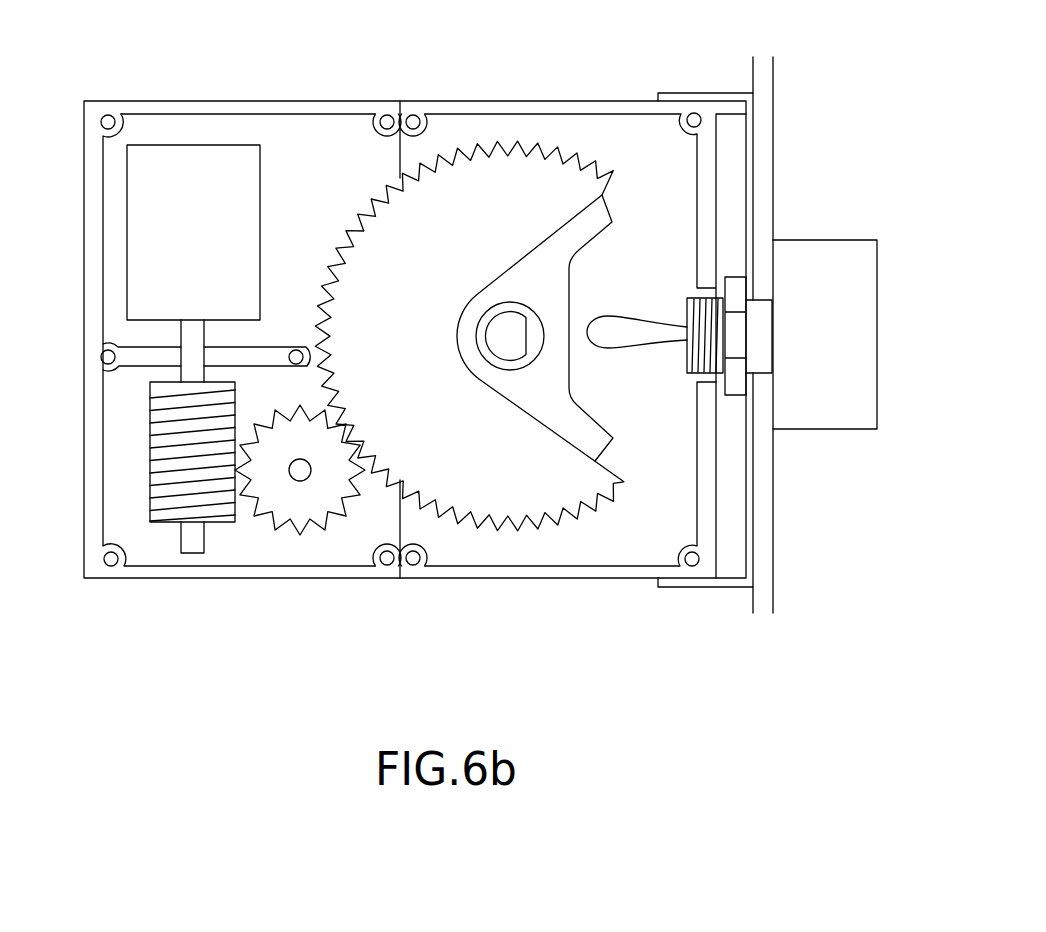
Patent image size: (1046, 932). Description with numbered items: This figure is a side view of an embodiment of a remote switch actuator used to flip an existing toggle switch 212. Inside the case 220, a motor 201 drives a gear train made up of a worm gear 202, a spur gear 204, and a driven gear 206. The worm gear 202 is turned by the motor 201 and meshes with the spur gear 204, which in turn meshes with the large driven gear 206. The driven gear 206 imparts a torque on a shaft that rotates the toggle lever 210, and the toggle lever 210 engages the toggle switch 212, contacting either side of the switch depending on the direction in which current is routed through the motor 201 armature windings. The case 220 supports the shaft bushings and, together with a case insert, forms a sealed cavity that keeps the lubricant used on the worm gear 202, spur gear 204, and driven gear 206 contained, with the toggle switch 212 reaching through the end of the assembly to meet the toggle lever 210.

The motor 201 is at (185, 180).
The worm gear 202 is at (150, 456).
The spur gear 204 is at (303, 505).
The driven gear 206 is at (493, 213).
The toggle lever 210 is at (560, 293).
The toggle switch 212 is at (803, 263).
The case 220 is at (232, 553).